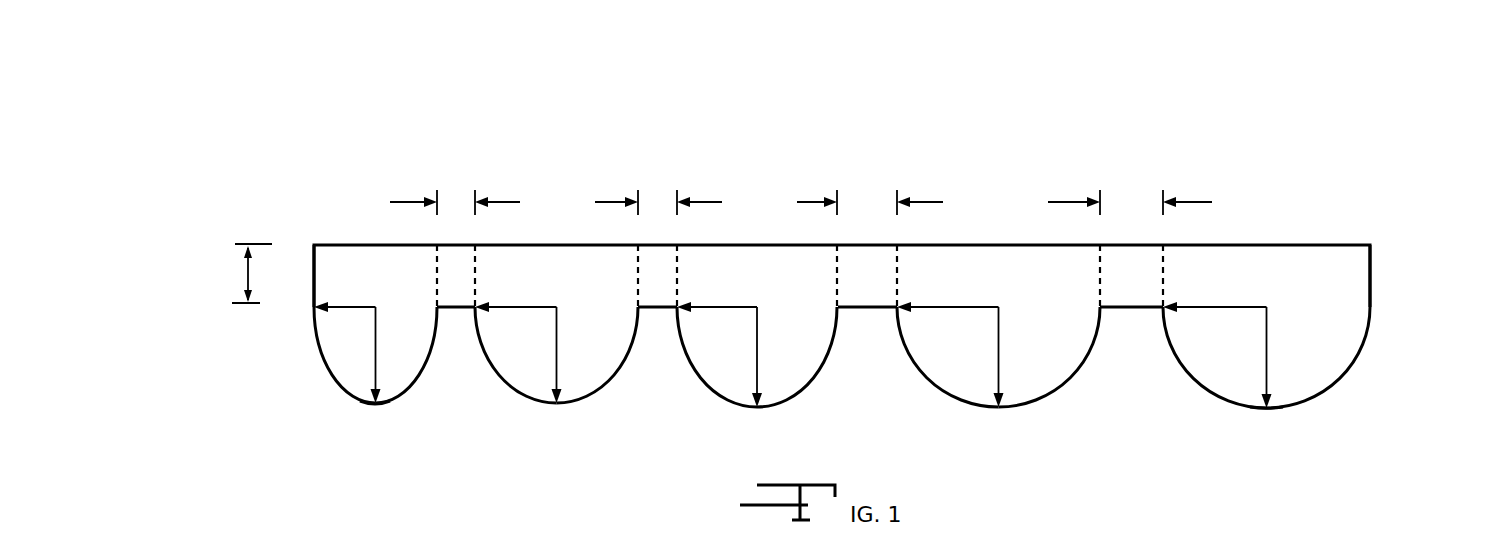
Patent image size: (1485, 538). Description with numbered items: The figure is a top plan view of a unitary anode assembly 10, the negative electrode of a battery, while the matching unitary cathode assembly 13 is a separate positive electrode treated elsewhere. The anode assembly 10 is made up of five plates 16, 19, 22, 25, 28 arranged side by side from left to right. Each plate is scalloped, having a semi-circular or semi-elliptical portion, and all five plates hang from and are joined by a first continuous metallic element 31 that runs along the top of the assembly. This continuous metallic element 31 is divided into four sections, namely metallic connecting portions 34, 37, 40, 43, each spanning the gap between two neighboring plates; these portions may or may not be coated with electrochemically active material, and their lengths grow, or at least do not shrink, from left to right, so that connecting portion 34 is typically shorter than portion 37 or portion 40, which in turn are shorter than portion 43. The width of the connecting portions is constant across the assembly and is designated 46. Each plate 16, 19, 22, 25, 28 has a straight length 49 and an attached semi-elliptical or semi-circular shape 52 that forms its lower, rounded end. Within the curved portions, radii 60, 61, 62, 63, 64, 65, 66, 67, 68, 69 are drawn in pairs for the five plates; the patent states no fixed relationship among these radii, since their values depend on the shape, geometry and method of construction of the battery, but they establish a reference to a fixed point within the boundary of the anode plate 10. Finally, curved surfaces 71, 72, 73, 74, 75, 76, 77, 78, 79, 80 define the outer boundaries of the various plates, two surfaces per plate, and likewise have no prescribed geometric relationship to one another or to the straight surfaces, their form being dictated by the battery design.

The unitary anode assembly 10 is at (250, 142).
The unitary cathode assembly 13 is at (842, 391).
The plate 16 is at (382, 288).
The plate 19 is at (566, 285).
The plate 22 is at (756, 284).
The plate 25 is at (998, 284).
The plate 28 is at (1268, 286).
The first continuous metallic element 31 is at (657, 268).
The metallic connecting portion 34 is at (453, 270).
The metallic connecting portion 37 is at (663, 310).
The metallic connecting portion 40 is at (863, 265).
The metallic connecting portion 43 is at (1131, 265).
The width 46 is at (243, 270).
The straight length 49 is at (313, 282).
The semi-elliptical or semi-circular shape 52 is at (375, 420).
The radius 60 is at (343, 308).
The radius 61 is at (368, 355).
The radius 62 is at (512, 308).
The radius 63 is at (558, 353).
The radius 64 is at (718, 308).
The radius 65 is at (757, 362).
The radius 66 is at (942, 310).
The radius 67 is at (1003, 353).
The radius 68 is at (1203, 310).
The radius 69 is at (1270, 353).
The curved surface 71 is at (333, 380).
The curved surface 72 is at (407, 390).
The curved surface 73 is at (517, 388).
The curved surface 74 is at (610, 387).
The curved surface 75 is at (720, 397).
The curved surface 76 is at (800, 397).
The curved surface 77 is at (935, 383).
The curved surface 78 is at (1042, 402).
The curved surface 79 is at (1203, 387).
The curved surface 80 is at (1360, 367).